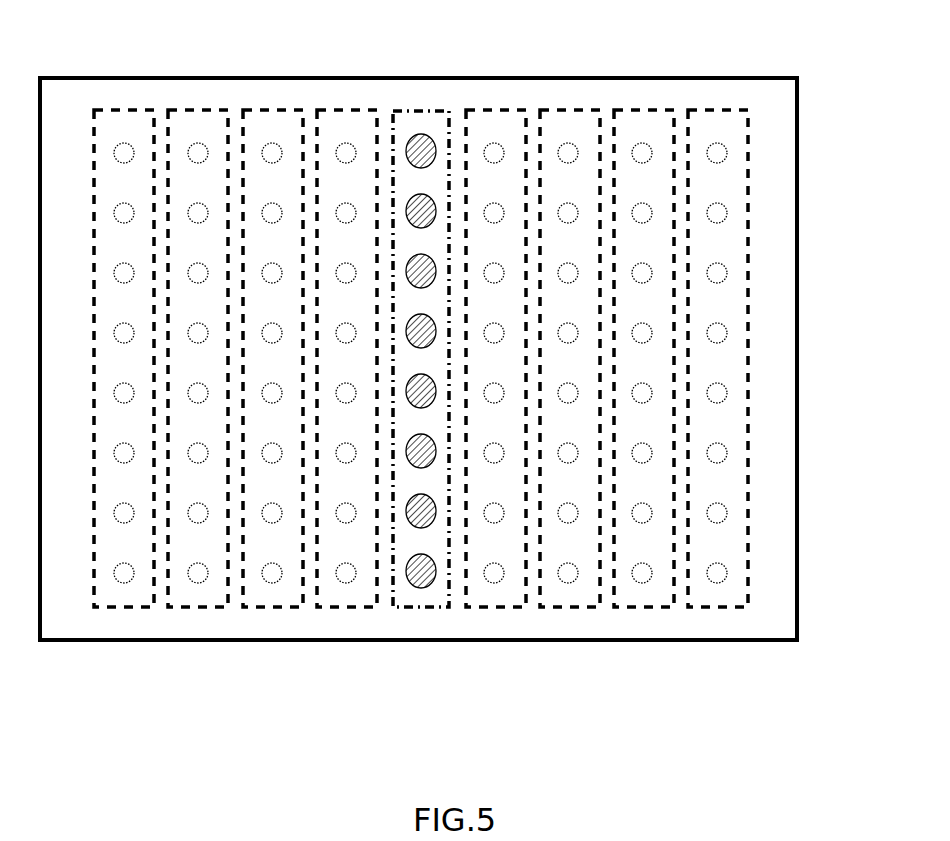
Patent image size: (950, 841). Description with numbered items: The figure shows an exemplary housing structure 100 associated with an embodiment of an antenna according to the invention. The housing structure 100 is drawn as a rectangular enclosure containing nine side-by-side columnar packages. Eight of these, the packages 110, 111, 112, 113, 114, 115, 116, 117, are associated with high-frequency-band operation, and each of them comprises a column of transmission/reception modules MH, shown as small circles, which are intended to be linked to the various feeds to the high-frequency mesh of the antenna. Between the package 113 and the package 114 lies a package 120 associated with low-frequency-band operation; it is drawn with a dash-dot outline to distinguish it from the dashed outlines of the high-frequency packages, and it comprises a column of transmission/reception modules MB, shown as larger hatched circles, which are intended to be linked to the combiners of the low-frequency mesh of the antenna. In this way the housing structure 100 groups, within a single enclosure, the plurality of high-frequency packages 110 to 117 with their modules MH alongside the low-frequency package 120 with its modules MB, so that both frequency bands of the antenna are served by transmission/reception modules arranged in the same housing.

The housing structure 100 is at (730, 78).
The package 110 is at (124, 609).
The package 111 is at (198, 609).
The package 112 is at (272, 609).
The package 113 is at (346, 609).
The package 120 is at (420, 609).
The package 114 is at (494, 609).
The package 115 is at (568, 609).
The package 116 is at (642, 609).
The package 117 is at (717, 609).
The transmission/reception module MB is at (415, 132).
The transmission/reception module MH is at (727, 214).